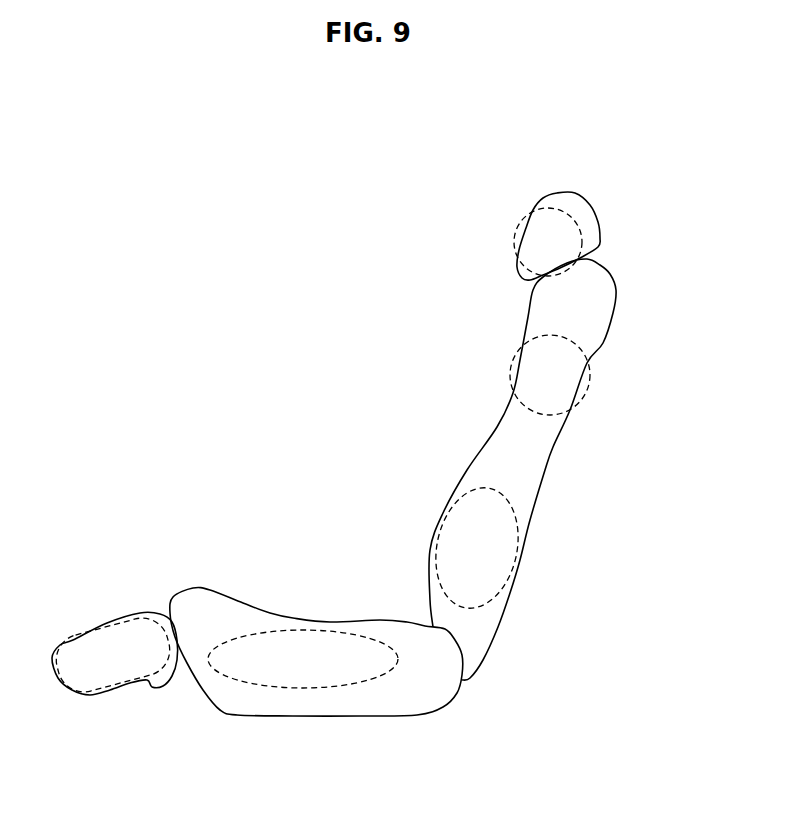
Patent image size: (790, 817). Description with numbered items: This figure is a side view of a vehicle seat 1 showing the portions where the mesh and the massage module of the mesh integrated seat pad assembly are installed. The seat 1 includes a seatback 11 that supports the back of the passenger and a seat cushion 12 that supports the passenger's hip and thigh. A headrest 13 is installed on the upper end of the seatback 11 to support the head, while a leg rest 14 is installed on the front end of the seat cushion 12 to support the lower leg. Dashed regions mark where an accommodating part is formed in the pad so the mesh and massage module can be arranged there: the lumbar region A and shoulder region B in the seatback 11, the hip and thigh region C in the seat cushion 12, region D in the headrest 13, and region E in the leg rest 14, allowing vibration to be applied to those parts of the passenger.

The seat 1 is at (636, 131).
The seatback 11 is at (533, 442).
The seat cushion 12 is at (298, 620).
The headrest 13 is at (587, 220).
The leg rest 14 is at (148, 677).